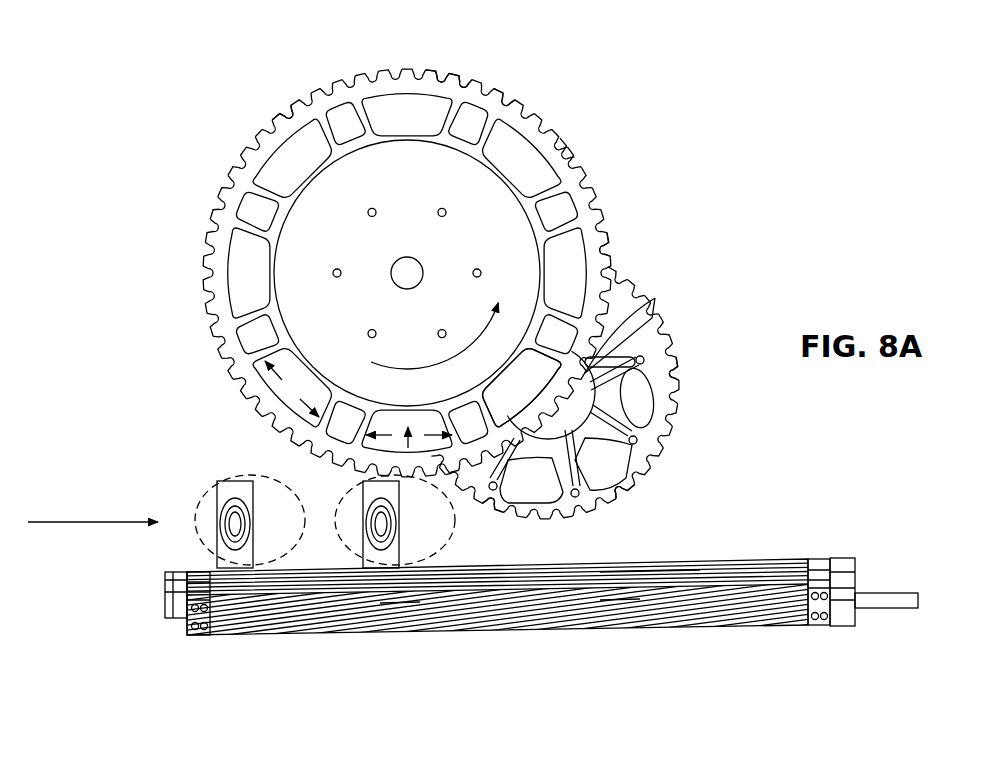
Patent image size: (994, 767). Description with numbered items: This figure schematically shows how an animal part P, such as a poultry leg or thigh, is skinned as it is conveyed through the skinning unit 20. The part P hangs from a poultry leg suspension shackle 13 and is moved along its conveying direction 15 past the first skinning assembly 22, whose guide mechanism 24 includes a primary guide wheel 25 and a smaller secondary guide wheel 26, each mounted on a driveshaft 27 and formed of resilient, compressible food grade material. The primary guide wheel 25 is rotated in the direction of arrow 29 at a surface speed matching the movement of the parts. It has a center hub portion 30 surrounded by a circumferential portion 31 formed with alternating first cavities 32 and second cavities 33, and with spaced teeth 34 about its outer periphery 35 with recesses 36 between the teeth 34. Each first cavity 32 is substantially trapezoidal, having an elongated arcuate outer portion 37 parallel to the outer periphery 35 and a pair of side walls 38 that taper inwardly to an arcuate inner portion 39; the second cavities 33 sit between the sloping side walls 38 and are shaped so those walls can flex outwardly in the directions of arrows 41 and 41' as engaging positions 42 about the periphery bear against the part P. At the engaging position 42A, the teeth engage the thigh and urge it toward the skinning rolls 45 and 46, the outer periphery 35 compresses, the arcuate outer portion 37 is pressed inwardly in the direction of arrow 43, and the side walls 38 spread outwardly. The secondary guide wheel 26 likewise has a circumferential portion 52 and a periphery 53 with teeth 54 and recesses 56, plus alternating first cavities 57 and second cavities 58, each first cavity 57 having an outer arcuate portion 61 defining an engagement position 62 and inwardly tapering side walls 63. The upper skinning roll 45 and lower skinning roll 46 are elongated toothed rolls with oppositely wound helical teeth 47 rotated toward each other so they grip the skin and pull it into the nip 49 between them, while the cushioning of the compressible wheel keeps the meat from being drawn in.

The poultry leg suspension shackle 13 is at (240, 506).
The conveying direction 15 is at (75, 520).
The skinning unit 20 is at (218, 68).
The first skinning assembly 22 is at (198, 160).
The guide mechanism 24 is at (642, 232).
The primary guide wheel 25 is at (575, 137).
The secondary guide wheel 26 is at (672, 307).
The driveshaft 27 is at (421, 279).
The direction of rotation arrow 29 is at (478, 324).
The center hub portion 30 is at (424, 242).
The circumferential portion 31 is at (331, 168).
The first cavity 32 is at (424, 143).
The second cavity 33 is at (357, 140).
The tooth 34 is at (457, 72).
The outer periphery 35 is at (503, 90).
The recess 36 is at (432, 68).
The arcuate outer portion 37 is at (268, 262).
The side wall 38 is at (278, 236).
The arcuate inner portion 39 is at (280, 282).
The arrow 41 is at (328, 393).
The arrow 41' is at (416, 396).
The engaging position 42 is at (407, 64).
The engaging position 42A is at (304, 488).
The arrow 43 is at (494, 500).
The upper skinning roll 45 is at (703, 634).
The lower skinning roll 46 is at (725, 558).
The helical teeth 47 is at (618, 598).
The nip 49 is at (398, 598).
The circumferential portion 52 is at (647, 358).
The periphery 53 is at (664, 376).
The tooth 54 is at (655, 462).
The recess 56 is at (660, 442).
The first cavity 57 is at (550, 493).
The second cavity 58 is at (562, 420).
The outer arcuate portion 61 is at (660, 433).
The engagement position 62 is at (624, 488).
The side wall 63 is at (642, 326).
The part P is at (336, 542).